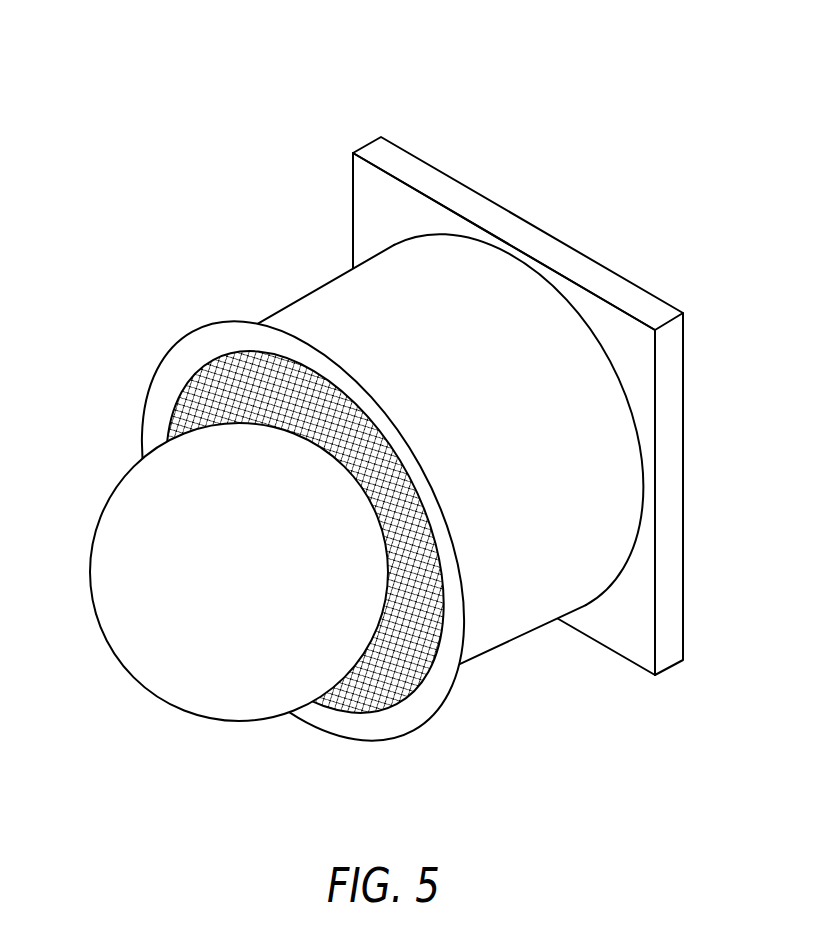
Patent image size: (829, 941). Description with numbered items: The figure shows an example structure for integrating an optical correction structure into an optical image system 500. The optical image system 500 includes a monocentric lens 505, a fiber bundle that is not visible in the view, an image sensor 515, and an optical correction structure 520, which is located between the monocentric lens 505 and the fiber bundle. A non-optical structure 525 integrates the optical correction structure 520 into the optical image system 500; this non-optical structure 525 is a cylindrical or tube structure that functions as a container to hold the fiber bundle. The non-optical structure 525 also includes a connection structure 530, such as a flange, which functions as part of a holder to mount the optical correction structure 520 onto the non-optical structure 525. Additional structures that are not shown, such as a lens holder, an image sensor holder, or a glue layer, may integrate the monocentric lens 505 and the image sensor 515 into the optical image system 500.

The optical image system 500 is at (160, 120).
The monocentric lens 505 is at (92, 573).
The image sensor 515 is at (683, 453).
The optical correction structure 520 is at (367, 690).
The non-optical structure 525 is at (498, 648).
The connection structure 530 is at (413, 730).